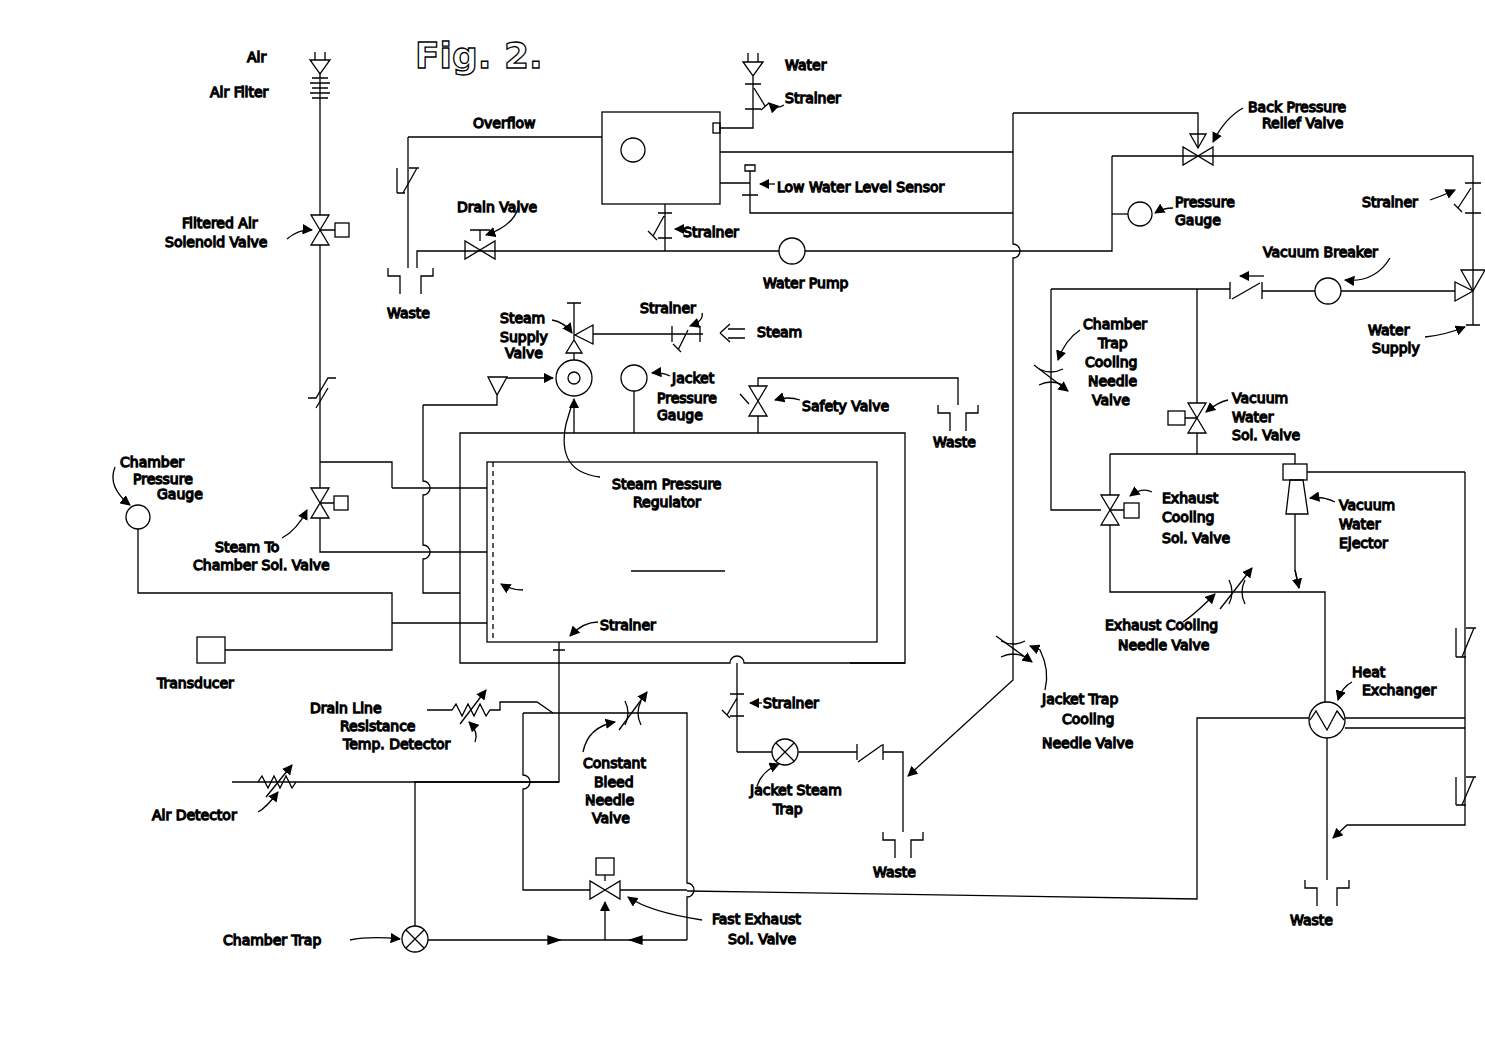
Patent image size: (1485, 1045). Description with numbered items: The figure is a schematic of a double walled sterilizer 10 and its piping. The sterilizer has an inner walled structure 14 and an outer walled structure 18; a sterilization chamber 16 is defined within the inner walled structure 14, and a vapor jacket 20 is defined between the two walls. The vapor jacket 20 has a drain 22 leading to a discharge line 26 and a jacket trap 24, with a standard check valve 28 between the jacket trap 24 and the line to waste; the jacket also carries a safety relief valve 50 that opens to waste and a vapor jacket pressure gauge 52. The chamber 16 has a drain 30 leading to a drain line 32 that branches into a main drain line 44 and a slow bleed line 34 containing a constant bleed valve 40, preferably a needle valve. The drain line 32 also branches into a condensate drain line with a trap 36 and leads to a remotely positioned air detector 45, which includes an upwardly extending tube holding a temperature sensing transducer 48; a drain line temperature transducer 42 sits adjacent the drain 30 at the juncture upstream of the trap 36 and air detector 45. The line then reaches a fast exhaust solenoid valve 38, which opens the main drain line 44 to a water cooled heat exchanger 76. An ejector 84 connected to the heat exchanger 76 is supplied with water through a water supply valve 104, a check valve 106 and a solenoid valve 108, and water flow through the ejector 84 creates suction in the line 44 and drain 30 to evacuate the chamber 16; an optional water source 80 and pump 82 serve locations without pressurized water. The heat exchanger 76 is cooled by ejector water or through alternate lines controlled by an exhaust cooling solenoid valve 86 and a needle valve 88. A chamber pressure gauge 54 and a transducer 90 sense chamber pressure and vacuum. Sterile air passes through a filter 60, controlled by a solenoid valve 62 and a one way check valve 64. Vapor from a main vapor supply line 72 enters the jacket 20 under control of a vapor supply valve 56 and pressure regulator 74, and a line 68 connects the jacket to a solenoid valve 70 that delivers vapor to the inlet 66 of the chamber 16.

The double walled sterilizer 10 is at (714, 565).
The inner walled structure 14 is at (876, 530).
The sterilization chamber 16 is at (752, 573).
The outer walled structure 18 is at (906, 597).
The vapor jacket 20 is at (878, 660).
The drain 22 is at (722, 671).
The jacket trap 24 is at (794, 741).
The discharge line 26 is at (737, 752).
The check valve 28 is at (878, 747).
The drain 30 is at (568, 637).
The drain line 32 is at (558, 685).
The slow bleed line 34 is at (580, 710).
The trap 36 is at (407, 928).
The fast exhaust solenoid valve 38 is at (584, 886).
The constant bleed valve 40 is at (640, 720).
The drain line temperature sensing means 42 is at (457, 705).
The main drain line 44 is at (523, 842).
The air detector 45 is at (303, 788).
The temperature sensing means 48 is at (276, 770).
The safety relief valve 50 is at (768, 418).
The vapor jacket pressure gauge 52 is at (578, 398).
The chamber pressure gauge 54 is at (150, 517).
The vapor supply valve 56 is at (578, 325).
The filter 60 is at (333, 90).
The solenoid valve 62 is at (317, 213).
The one way check valve 64 is at (317, 378).
The inlet 66 is at (497, 490).
The line 68 is at (393, 526).
The solenoid valve 70 is at (312, 499).
The main vapor supply line 72 is at (570, 404).
The pressure regulator 74 is at (591, 370).
The water cooled heat exchanger 76 is at (1309, 709).
The water source 80 is at (669, 112).
The pump 82 is at (806, 249).
The ejector 84 is at (1282, 492).
The exhaust cooling solenoid valve 86 is at (1104, 496).
The needle valve 88 is at (1248, 598).
The transducer 90 is at (218, 636).
The water supply valve 104 is at (1453, 291).
The check valve 106 is at (1247, 298).
The solenoid valve 108 is at (1199, 399).